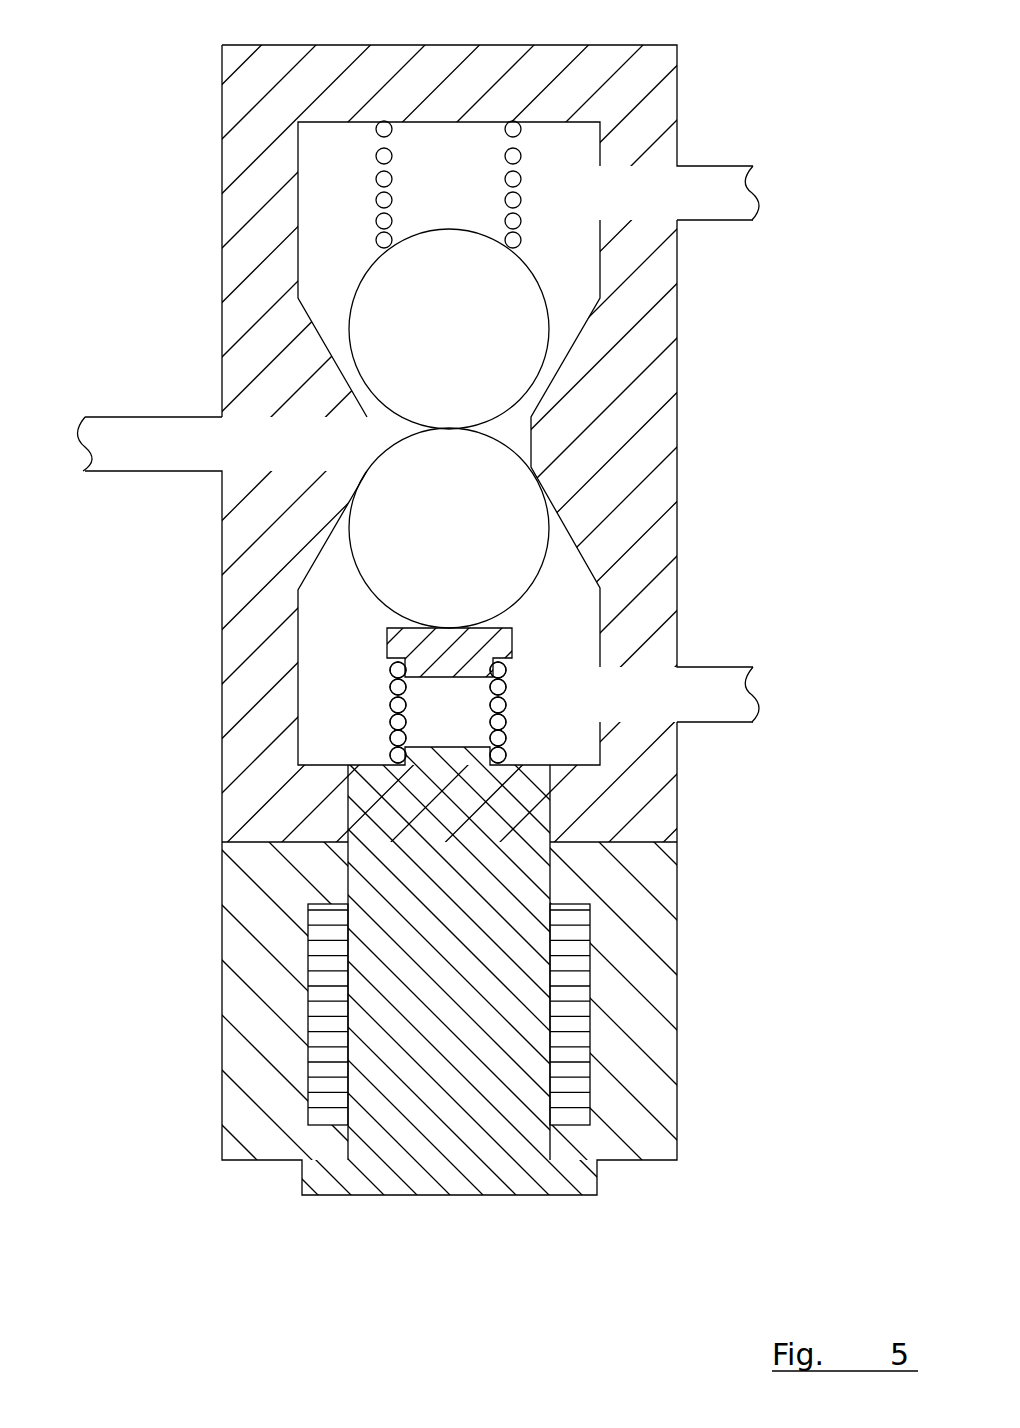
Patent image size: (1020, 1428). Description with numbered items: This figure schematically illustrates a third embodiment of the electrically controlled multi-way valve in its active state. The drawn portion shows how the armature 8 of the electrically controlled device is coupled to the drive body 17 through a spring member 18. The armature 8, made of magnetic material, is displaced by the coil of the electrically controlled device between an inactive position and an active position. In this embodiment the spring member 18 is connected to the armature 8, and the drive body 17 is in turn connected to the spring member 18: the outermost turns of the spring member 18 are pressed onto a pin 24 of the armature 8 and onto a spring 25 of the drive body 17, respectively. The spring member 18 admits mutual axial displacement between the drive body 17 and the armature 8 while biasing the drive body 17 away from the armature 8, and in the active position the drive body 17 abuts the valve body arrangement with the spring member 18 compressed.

The armature 8 is at (428, 1197).
The drive body 17 is at (403, 632).
The spring member 18 is at (397, 723).
The pin 24 is at (403, 763).
The spring 25 is at (392, 672).